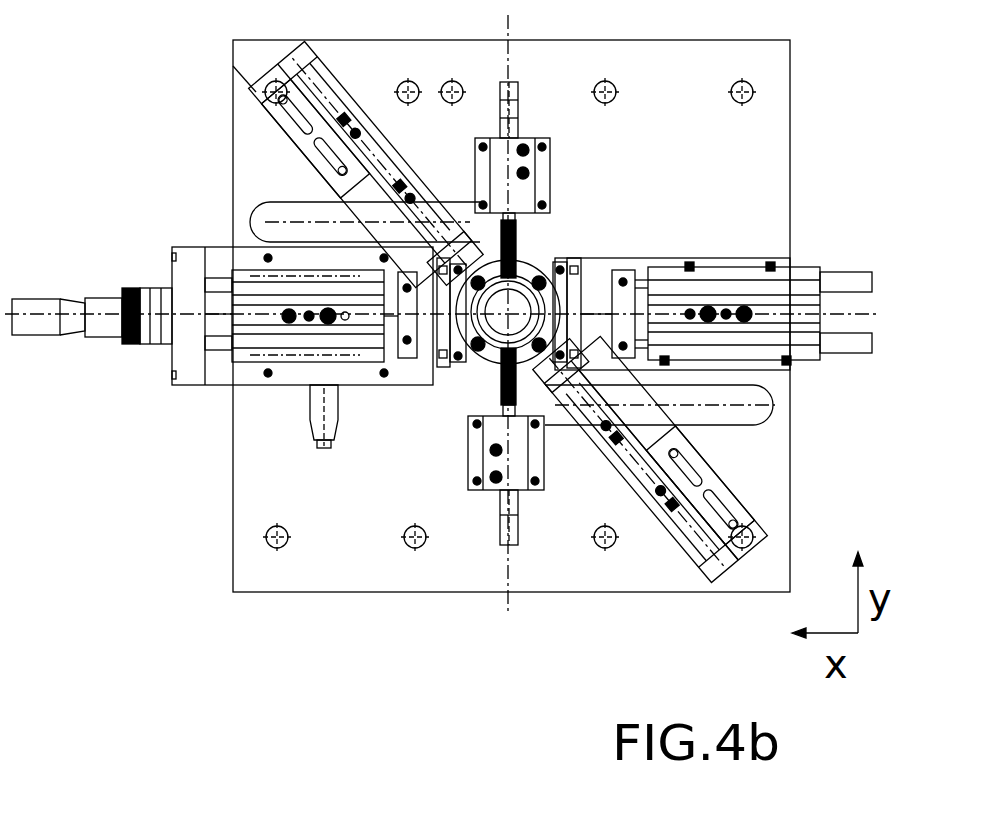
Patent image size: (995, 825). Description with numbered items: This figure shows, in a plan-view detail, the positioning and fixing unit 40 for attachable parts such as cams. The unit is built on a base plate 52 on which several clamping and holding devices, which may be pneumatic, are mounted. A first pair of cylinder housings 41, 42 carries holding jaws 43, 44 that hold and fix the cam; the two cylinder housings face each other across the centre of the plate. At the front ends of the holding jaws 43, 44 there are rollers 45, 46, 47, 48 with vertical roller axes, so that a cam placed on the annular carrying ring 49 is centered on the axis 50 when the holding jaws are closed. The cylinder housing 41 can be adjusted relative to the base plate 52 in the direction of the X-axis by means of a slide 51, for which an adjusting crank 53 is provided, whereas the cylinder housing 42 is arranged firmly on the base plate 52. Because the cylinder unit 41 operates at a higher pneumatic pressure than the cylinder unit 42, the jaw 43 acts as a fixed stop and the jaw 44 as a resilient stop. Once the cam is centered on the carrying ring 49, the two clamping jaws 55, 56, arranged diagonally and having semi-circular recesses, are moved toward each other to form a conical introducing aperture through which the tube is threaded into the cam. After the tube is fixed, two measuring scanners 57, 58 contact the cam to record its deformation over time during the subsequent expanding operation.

The positioning and fixing unit 40 is at (190, 185).
The cylinder housing 41 is at (300, 385).
The cylinder housing 42 is at (733, 262).
The holding jaw 43 is at (417, 366).
The holding jaw 44 is at (618, 260).
The roller 45 is at (443, 372).
The roller 46 is at (458, 372).
The roller 47 is at (565, 258).
The roller 48 is at (586, 258).
The carrying ring 49 is at (551, 204).
The axis 50 is at (478, 492).
The slide 51 is at (228, 392).
The base plate 52 is at (288, 588).
The adjusting crank 53 is at (105, 332).
The clamping jaw 55 is at (422, 212).
The clamping jaw 56 is at (603, 462).
The measuring scanner 57 is at (512, 200).
The measuring scanner 58 is at (512, 425).